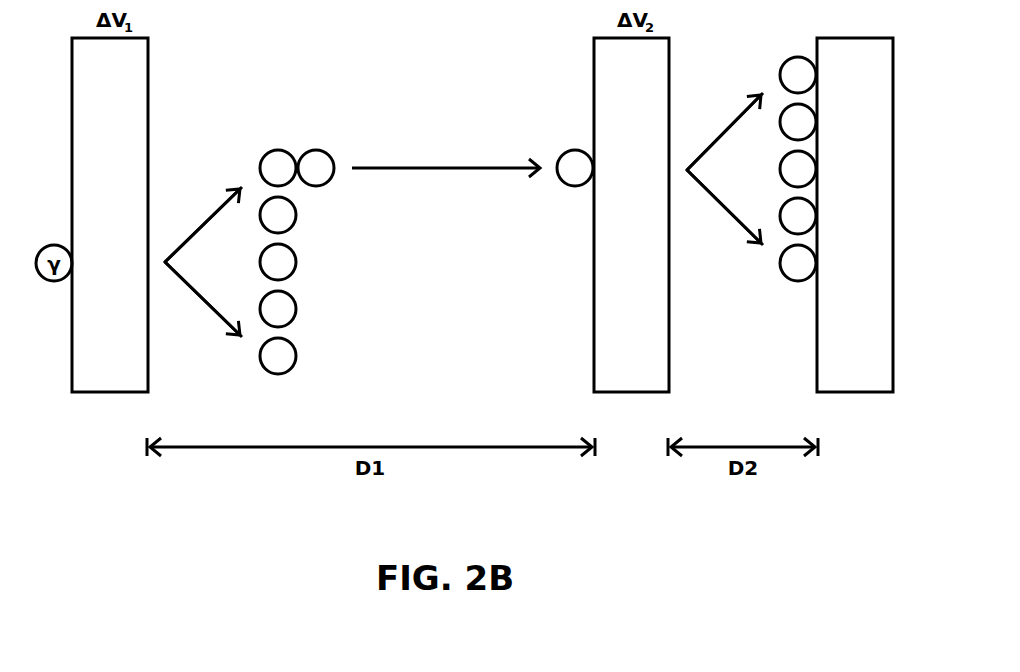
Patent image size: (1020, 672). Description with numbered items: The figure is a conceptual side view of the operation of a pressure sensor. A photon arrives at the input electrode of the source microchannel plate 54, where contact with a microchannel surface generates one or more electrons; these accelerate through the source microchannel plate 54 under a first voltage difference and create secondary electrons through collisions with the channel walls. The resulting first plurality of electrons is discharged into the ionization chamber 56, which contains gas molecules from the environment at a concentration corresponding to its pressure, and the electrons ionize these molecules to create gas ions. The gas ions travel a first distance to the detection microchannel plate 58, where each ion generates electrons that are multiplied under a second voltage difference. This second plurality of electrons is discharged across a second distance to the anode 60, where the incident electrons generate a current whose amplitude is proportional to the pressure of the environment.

The source microchannel plate 54 is at (110, 215).
The ionization chamber 56 is at (379, 262).
The detection microchannel plate 58 is at (631, 215).
The anode 60 is at (790, 215).